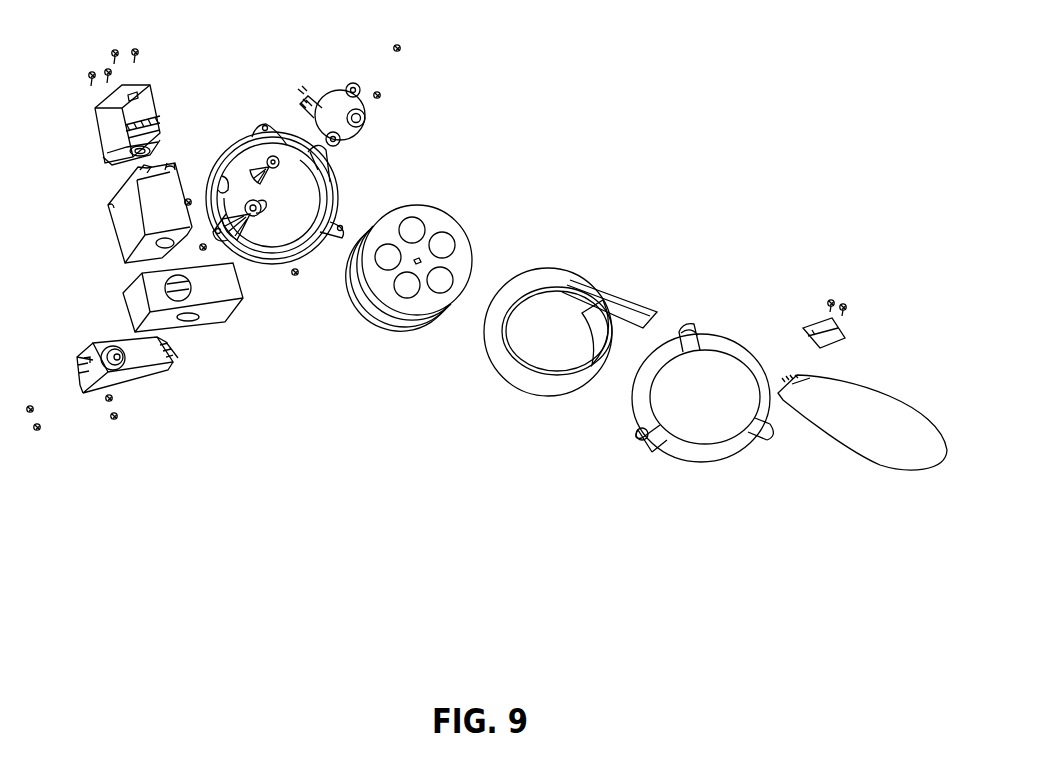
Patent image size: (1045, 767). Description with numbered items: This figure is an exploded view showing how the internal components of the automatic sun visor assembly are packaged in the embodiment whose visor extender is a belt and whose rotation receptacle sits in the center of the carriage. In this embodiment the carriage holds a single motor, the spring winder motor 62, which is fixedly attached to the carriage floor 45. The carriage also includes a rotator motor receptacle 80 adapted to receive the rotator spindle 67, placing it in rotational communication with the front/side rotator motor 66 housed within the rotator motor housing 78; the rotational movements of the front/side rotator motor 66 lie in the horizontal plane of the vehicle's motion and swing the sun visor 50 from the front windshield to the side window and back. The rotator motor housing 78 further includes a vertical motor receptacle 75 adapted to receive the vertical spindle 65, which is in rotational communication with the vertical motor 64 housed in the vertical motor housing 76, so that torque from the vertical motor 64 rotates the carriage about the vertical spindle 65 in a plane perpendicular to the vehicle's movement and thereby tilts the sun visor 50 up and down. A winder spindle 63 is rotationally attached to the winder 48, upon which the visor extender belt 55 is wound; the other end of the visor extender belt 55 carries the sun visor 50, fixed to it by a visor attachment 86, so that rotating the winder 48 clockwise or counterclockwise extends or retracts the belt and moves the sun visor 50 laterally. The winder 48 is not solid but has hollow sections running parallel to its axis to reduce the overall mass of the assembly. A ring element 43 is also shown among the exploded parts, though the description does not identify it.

The clamp ring 43 is at (708, 340).
The carriage floor 45 is at (328, 177).
The winder 48 is at (462, 232).
The sun visor 50 is at (867, 387).
The visor extender belt 55 is at (573, 280).
The spring winder motor 62 is at (340, 105).
The winder spindle 63 is at (366, 117).
The vertical motor 64 is at (150, 105).
The vertical spindle 65 is at (153, 157).
The front/side rotator motor 66 is at (122, 357).
The rotator spindle 67 is at (118, 354).
The vertical motor receptacle 75 is at (192, 318).
The vertical motor housing 76 is at (123, 213).
The rotator motor housing 78 is at (220, 285).
The rotator motor receptacle 80 is at (265, 204).
The visor attachment 86 is at (812, 330).